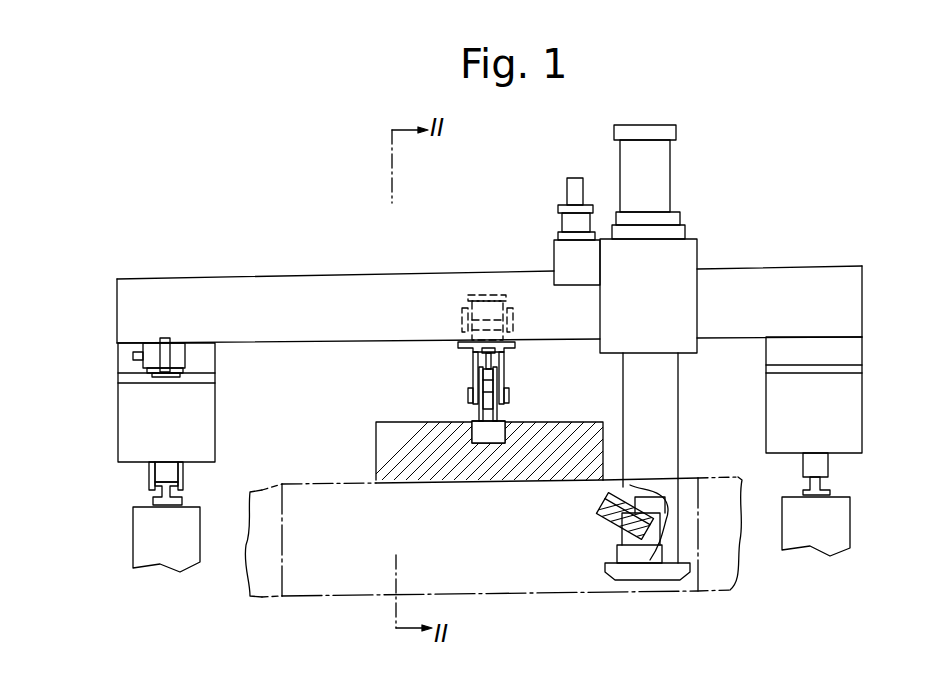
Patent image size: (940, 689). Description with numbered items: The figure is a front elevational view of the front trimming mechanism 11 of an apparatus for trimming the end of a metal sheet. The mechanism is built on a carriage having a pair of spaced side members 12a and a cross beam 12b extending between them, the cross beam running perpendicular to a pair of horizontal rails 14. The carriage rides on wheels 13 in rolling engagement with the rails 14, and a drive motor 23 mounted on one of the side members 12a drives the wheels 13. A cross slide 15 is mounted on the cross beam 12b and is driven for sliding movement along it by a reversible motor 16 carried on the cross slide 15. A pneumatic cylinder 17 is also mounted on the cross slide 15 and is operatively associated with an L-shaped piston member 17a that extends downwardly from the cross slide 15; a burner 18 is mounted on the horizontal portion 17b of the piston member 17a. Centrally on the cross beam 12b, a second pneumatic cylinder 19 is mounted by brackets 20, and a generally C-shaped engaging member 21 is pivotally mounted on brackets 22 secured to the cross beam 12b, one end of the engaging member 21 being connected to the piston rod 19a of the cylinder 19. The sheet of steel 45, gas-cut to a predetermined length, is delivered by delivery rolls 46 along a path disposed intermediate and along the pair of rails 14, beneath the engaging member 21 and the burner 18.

The front trimming mechanism 11 is at (726, 198).
The side member 12a is at (215, 426).
The cross beam 12b is at (365, 276).
The wheel 13 is at (184, 476).
The horizontal rail 14 is at (152, 499).
The cross slide 15 is at (699, 246).
The reversible motor 16 is at (575, 190).
The pneumatic cylinder 17 is at (628, 150).
The L-shaped piston member 17a is at (668, 437).
The horizontal portion 17b is at (650, 582).
The burner 18 is at (603, 514).
The pneumatic cylinder 19 is at (482, 295).
The piston rod 19a is at (498, 362).
The bracket 20 is at (462, 316).
The engaging member 21 is at (498, 404).
The bracket 22 is at (472, 380).
The drive motor 23 is at (188, 352).
The sheet of steel 45 is at (413, 425).
The delivery roll 46 is at (524, 592).